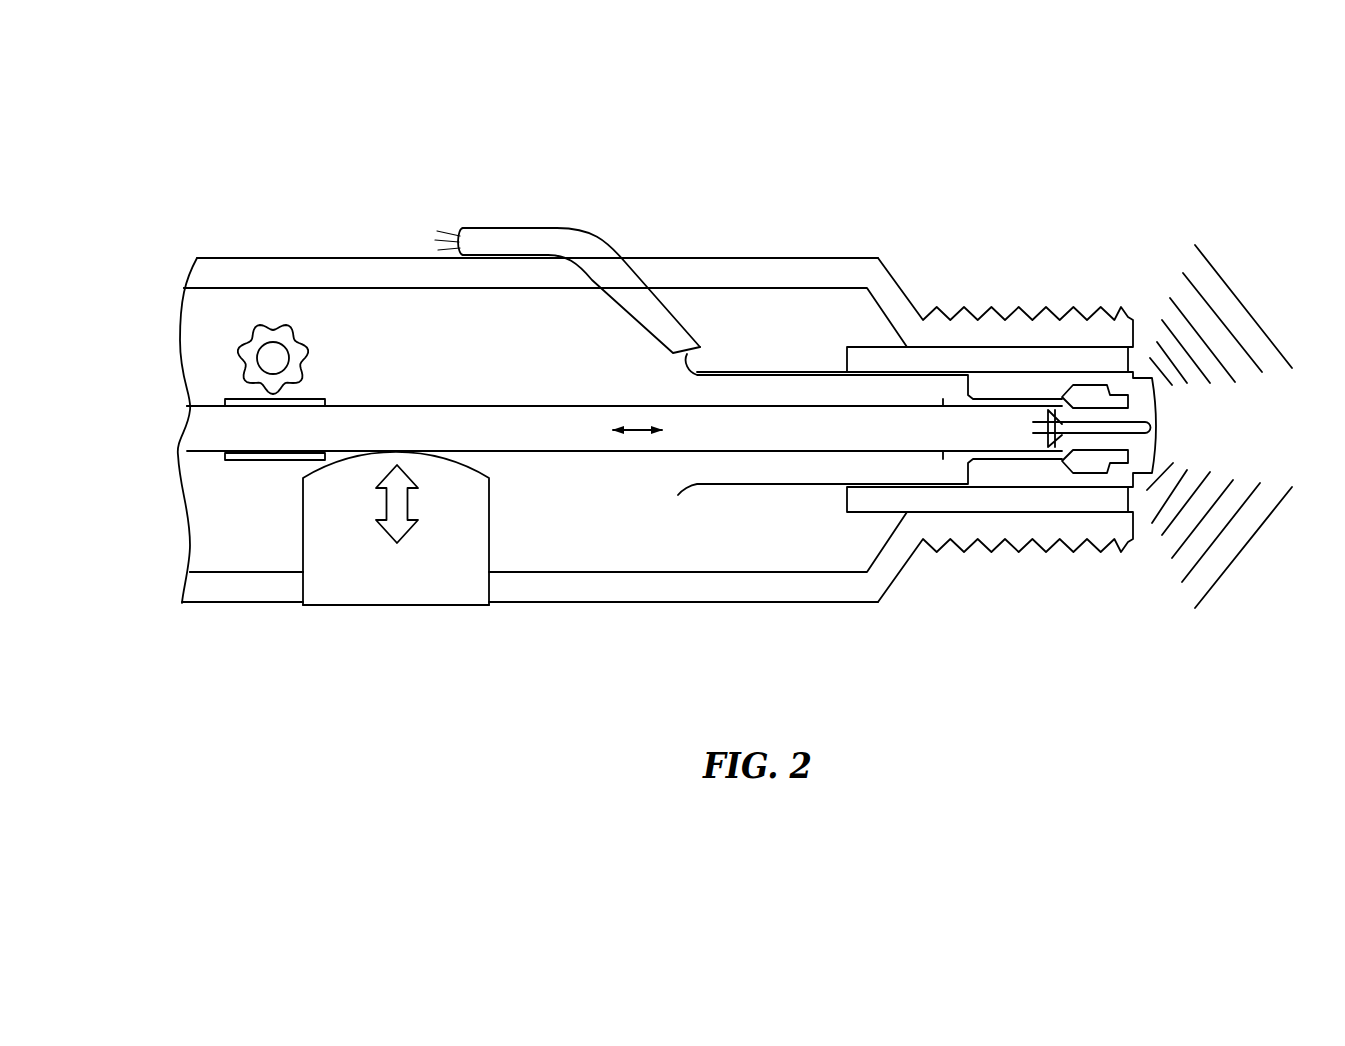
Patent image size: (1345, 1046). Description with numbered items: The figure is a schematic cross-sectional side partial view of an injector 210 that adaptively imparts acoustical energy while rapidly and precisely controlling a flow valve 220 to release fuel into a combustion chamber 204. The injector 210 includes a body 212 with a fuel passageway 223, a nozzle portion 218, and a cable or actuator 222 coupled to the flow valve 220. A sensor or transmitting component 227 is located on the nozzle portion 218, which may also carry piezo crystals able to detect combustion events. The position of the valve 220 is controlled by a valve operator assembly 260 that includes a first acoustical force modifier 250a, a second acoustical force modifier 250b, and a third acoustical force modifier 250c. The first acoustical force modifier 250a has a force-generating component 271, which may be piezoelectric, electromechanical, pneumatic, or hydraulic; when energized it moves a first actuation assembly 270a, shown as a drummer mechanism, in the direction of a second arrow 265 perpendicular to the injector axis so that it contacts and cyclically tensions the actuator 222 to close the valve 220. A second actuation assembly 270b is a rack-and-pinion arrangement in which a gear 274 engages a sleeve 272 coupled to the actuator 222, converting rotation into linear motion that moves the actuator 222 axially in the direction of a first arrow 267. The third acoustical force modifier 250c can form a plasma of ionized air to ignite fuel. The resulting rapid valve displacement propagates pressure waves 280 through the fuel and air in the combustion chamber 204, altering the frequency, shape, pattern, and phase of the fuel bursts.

The combustion chamber 204 is at (1290, 297).
The injector 210 is at (613, 218).
The body 212 is at (835, 273).
The nozzle portion 218 is at (953, 573).
The flow valve 220 is at (1018, 378).
The cable or actuator 222 is at (415, 427).
The fuel passageway 223 is at (760, 572).
The sensor or transmitting component 227 is at (1160, 450).
The first acoustical force modifier 250a is at (293, 520).
The second acoustical force modifier 250b is at (240, 331).
The third acoustical force modifier 250c is at (537, 240).
The valve operator assembly 260 is at (230, 485).
The second arrow 265 is at (410, 505).
The first arrow 267 is at (640, 432).
The first actuation assembly 270a is at (357, 580).
The second actuation assembly 270b is at (213, 352).
The force-generating component 271 is at (314, 533).
The rack or sleeve 272 is at (225, 403).
The pinion or gear 274 is at (271, 322).
The pressure waves 280 is at (1229, 426).